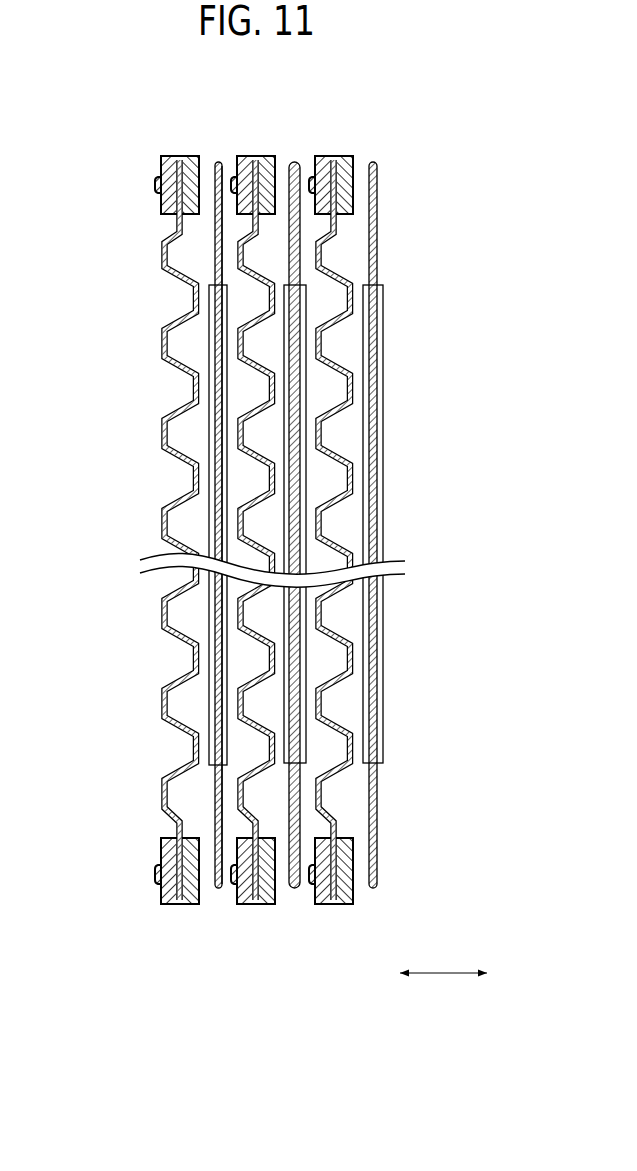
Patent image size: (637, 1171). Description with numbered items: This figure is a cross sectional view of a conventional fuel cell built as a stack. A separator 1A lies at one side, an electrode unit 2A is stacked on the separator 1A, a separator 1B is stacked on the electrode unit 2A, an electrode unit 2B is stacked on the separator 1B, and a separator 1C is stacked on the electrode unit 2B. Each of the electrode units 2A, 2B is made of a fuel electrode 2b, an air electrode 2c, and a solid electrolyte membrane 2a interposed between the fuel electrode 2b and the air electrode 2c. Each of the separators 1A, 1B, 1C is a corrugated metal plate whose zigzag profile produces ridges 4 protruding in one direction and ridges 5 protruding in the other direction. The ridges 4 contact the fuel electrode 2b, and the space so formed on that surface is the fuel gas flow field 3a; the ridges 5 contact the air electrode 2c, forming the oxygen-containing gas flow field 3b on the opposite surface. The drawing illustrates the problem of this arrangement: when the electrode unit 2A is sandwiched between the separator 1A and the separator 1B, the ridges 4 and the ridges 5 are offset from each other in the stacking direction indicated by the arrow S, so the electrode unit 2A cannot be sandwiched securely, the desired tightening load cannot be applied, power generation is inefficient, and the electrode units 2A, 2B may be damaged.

The separator 1A is at (180, 912).
The separator 1B is at (196, 569).
The separator 1C is at (333, 912).
The electrode unit 2A is at (139, 525).
The solid electrolyte membrane 2a is at (218, 438).
The fuel electrode 2b is at (222, 480).
The air electrode 2c is at (220, 385).
The electrode unit 2B is at (295, 157).
The fuel gas flow field 3a is at (250, 660).
The oxygen-containing gas flow field 3b is at (183, 613).
The ridges 4 is at (237, 708).
The ridges 5 is at (273, 745).
The stacking direction S is at (443, 964).